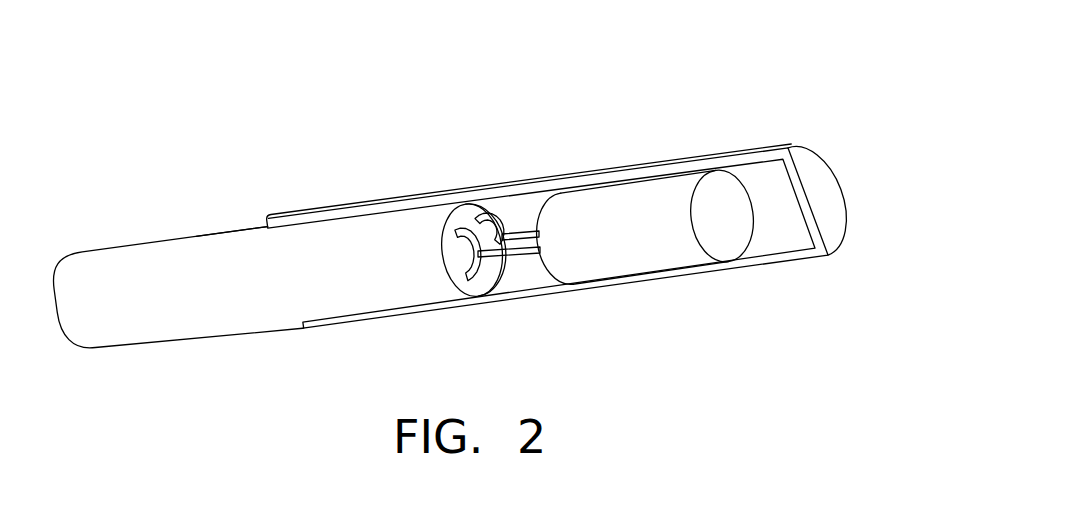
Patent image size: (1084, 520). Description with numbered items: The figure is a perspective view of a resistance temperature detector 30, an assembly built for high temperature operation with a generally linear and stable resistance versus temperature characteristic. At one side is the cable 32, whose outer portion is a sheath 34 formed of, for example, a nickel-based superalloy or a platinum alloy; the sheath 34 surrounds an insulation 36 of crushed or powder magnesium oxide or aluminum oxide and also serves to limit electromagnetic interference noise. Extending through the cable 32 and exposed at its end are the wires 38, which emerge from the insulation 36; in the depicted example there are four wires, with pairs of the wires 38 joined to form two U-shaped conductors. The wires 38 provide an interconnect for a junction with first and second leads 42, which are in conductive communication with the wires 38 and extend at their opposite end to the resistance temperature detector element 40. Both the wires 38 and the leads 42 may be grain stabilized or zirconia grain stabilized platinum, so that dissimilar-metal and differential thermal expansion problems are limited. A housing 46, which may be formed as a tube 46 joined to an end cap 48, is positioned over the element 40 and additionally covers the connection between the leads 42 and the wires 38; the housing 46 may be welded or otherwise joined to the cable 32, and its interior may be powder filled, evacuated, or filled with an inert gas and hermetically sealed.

The resistance temperature detector 30 is at (450, 213).
The cable 32 is at (166, 251).
The sheath 34 is at (233, 230).
The insulation 36 is at (493, 279).
The wires 38 is at (495, 220).
The resistance temperature detector element 40 is at (610, 208).
The leads 42 is at (527, 257).
The housing 46 is at (703, 157).
The end cap 48 is at (813, 183).